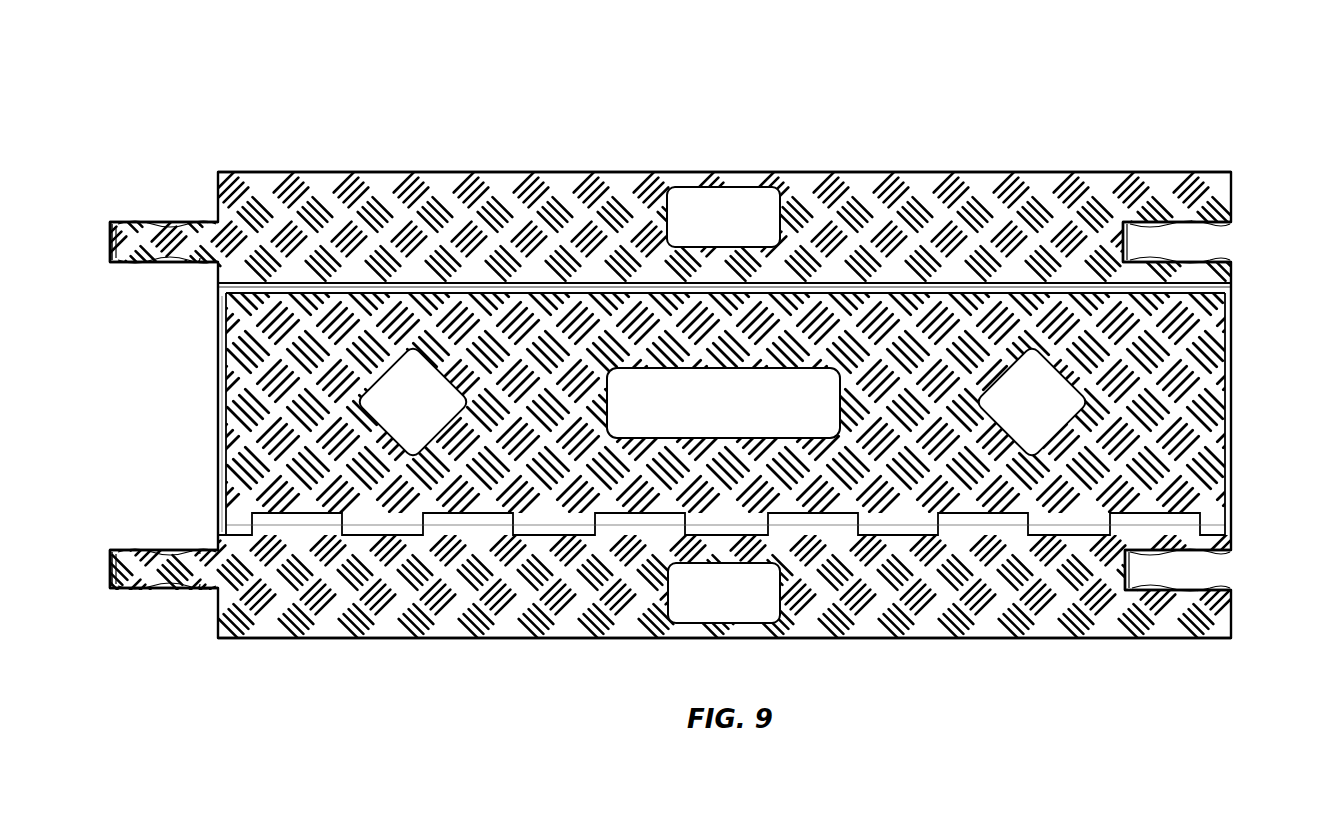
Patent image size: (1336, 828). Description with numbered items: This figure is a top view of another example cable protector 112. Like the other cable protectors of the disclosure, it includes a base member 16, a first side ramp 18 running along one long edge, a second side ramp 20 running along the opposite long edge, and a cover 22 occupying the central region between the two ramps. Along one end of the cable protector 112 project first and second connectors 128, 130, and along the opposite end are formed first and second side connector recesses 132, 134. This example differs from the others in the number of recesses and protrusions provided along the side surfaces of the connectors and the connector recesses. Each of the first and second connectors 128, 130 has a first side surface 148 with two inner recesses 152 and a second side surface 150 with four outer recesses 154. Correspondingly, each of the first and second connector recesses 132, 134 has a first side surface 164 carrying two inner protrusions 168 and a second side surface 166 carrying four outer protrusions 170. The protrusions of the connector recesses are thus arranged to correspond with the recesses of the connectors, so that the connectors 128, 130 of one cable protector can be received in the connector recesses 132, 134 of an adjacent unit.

The cable protector 112 is at (958, 132).
The base member 16 is at (214, 421).
The first side ramp 18 is at (433, 171).
The second side ramp 20 is at (460, 639).
The cover 22 is at (243, 392).
The first connector 128 is at (160, 266).
The second connector 130 is at (158, 596).
The first side connector recess 132 is at (1238, 234).
The second side connector recess 134 is at (1232, 566).
The first side surface 148 is at (150, 263).
The second side surface 150 is at (152, 221).
The inner recesses 152 is at (197, 263).
The outer recesses 154 is at (190, 221).
The first side surface 164 is at (1193, 263).
The second side surface 166 is at (1188, 221).
The inner protrusions 168 is at (1148, 261).
The outer protrusions 170 is at (1124, 221).